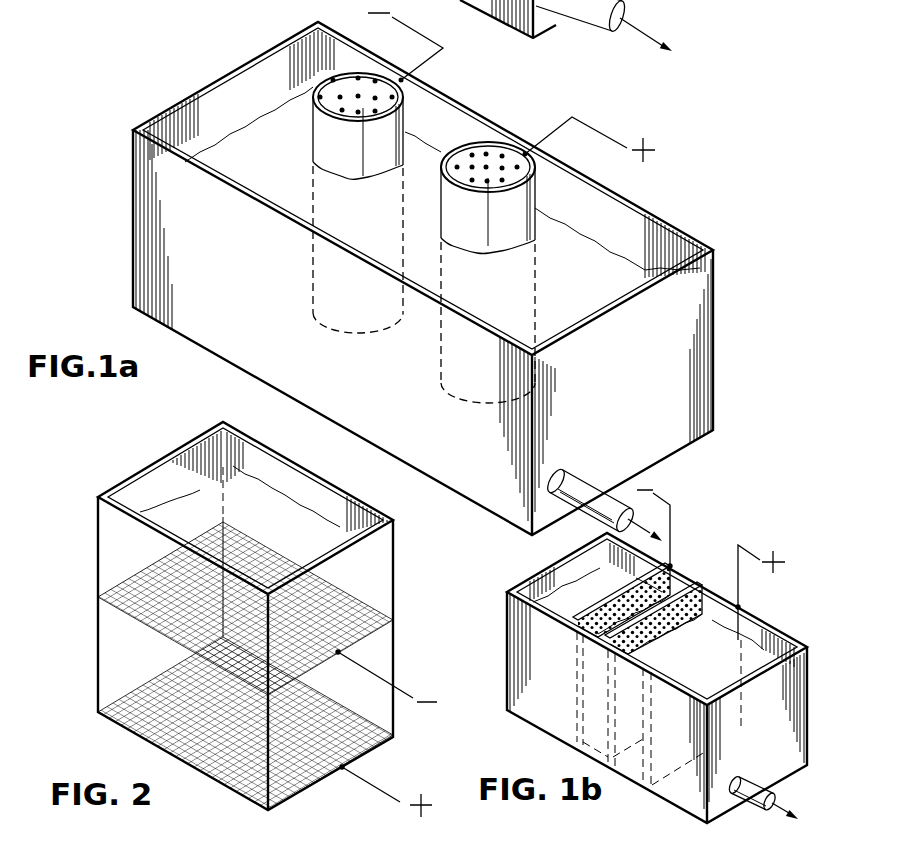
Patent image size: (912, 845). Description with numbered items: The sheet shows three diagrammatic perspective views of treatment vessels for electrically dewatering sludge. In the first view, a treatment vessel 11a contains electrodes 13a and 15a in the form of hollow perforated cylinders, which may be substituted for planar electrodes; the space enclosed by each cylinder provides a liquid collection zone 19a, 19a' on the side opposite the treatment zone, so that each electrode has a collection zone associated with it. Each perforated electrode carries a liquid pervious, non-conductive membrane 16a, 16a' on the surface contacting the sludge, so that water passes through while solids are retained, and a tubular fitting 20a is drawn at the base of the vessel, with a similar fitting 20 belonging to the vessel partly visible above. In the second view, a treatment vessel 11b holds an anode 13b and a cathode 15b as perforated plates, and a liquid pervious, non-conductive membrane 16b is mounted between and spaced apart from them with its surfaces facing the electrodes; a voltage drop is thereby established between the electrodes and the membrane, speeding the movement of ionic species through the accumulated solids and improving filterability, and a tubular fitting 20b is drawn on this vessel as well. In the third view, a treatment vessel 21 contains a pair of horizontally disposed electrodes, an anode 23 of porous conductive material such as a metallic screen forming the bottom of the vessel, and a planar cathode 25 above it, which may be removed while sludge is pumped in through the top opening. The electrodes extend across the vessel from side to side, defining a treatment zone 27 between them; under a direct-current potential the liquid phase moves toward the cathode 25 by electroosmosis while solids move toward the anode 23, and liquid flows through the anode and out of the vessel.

In FIG. 1a, the treatment vessel 11a is at (717, 256).
In FIG. 1a, the electrode 13a is at (484, 147).
In FIG. 1a, the electrode 15a is at (405, 79).
In FIG. 1a, the membrane 16a is at (488, 285).
In FIG. 1a, the cylindrical filter element 16a' is at (327, 215).
In FIG. 1a, the liquid collection zone 19a is at (589, 139).
In FIG. 1a, the liquid collection zone 19a' is at (323, 67).
In FIG. 1a, the outlet pipe 20a is at (593, 494).
In FIG. 1a, the outlet pipe of preceding figure 20 is at (566, 25).
In FIG. 1b, the treatment vessel 11b is at (807, 662).
In FIG. 1b, the anode 13b is at (740, 606).
In FIG. 1b, the cathode 15b is at (670, 565).
In FIG. 1b, the membrane 16b is at (716, 569).
In FIG. 1b, the outlet pipe 20b is at (770, 786).
In FIG. 2, the treatment vessel 21 is at (98, 557).
In FIG. 2, the anode 23 is at (366, 753).
In FIG. 2, the cathode 25 is at (394, 617).
In FIG. 2, the treatment zone 27 is at (118, 662).